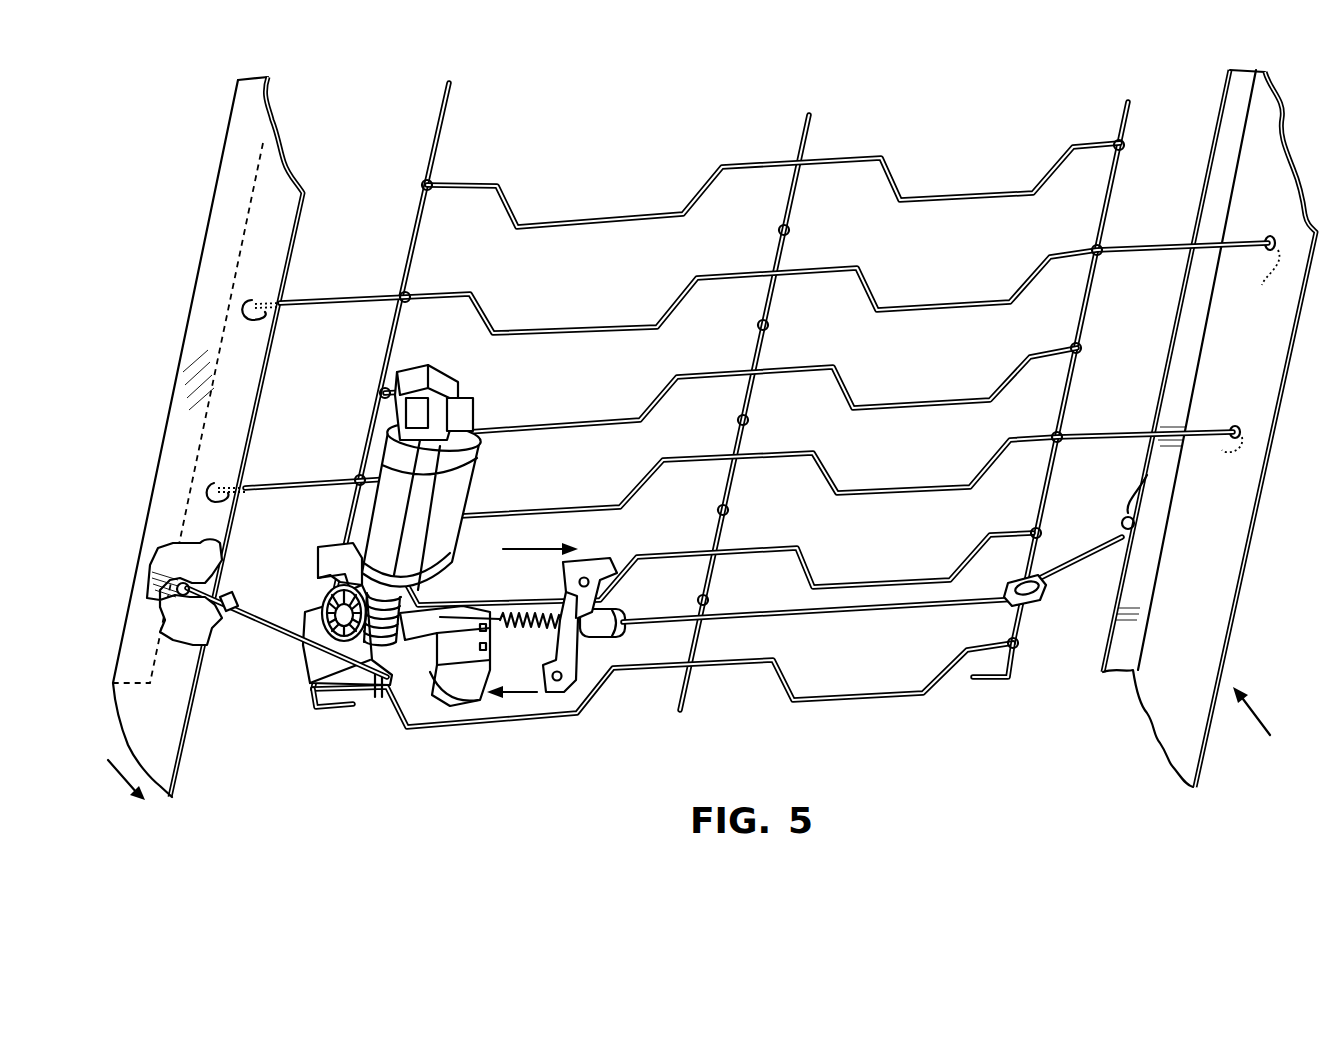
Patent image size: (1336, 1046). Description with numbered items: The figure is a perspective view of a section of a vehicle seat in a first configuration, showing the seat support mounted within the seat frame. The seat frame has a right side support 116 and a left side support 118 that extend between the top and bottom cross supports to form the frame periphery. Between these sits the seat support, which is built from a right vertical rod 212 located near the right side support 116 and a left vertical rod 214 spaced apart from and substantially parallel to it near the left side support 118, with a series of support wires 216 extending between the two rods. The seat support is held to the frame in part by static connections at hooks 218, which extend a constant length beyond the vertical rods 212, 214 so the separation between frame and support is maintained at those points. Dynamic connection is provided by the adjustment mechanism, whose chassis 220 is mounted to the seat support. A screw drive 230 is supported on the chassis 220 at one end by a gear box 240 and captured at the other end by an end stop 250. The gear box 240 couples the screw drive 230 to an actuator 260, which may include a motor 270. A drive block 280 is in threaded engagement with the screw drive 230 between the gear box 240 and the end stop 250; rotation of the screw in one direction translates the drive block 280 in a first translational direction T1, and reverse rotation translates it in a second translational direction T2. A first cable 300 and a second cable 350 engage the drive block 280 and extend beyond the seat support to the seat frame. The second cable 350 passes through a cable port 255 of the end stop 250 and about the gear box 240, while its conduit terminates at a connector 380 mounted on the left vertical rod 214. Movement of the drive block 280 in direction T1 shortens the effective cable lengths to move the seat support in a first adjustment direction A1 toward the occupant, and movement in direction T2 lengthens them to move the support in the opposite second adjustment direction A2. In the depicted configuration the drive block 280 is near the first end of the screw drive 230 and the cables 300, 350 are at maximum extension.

The right side support 116 is at (172, 797).
The left side support 118 is at (1160, 747).
The right vertical rod 212 is at (323, 710).
The left vertical rod 214 is at (997, 683).
The support wires 216 is at (567, 327).
The hooks 218 is at (243, 306).
The chassis 220 is at (338, 549).
The screw drive 230 is at (537, 600).
The gear box 240 is at (320, 606).
The end stop 250 is at (603, 563).
The cable port 255 is at (592, 640).
The actuator 260 is at (395, 432).
The motor 270 is at (400, 488).
The drive block 280 is at (477, 695).
The first cable 300 is at (258, 620).
The second cable 350 is at (865, 612).
The connector 380 is at (1032, 600).
The first translational direction T1 is at (540, 547).
The second translational direction T2 is at (513, 700).
The first adjustment direction A1 is at (1253, 718).
The second adjustment direction A2 is at (125, 777).